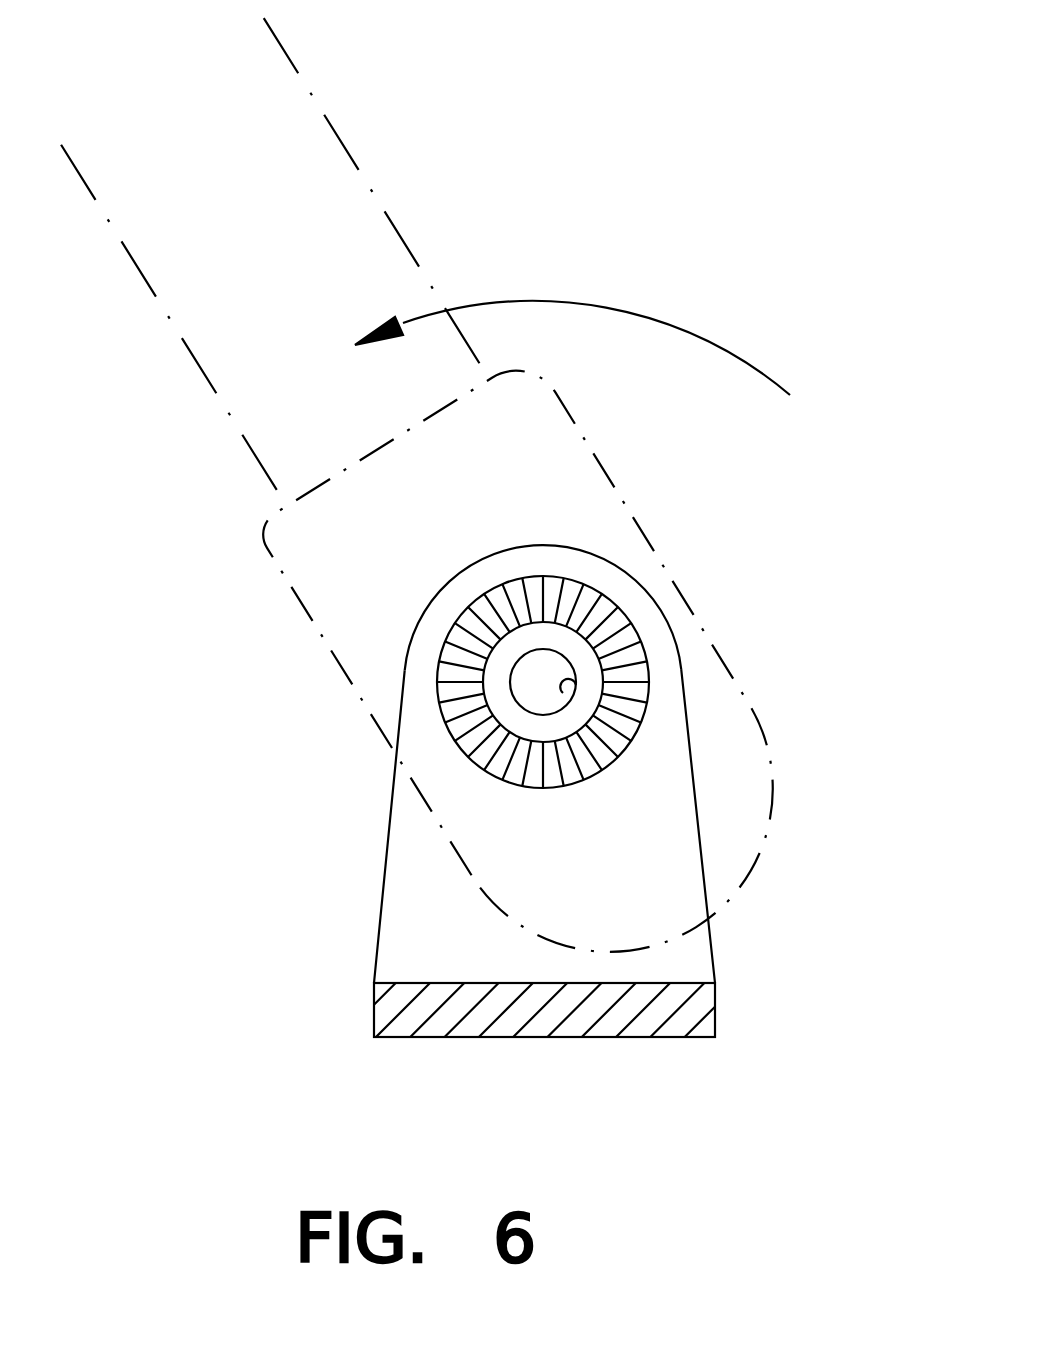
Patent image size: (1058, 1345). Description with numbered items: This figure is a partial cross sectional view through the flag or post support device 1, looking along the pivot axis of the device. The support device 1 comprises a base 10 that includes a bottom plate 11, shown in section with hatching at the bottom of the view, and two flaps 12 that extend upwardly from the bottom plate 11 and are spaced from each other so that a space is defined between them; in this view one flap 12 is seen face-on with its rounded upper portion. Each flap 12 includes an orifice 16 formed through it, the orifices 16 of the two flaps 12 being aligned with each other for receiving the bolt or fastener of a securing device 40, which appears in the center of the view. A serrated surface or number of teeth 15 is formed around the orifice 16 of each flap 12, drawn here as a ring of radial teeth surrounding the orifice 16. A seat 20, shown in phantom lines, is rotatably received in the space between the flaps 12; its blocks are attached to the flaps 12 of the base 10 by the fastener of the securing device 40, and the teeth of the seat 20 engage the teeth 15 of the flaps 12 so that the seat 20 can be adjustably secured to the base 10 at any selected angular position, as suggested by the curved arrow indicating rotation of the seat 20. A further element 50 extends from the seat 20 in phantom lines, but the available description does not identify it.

The flag or post support device 1 is at (544, 741).
The base 10 is at (505, 741).
The bottom plate 11 is at (698, 1016).
The flap 12 is at (600, 572).
The teeth 15 is at (607, 620).
The orifice 16 is at (567, 690).
The seat 20 is at (560, 463).
The securing device 40 is at (527, 687).
The handle 50 is at (333, 188).